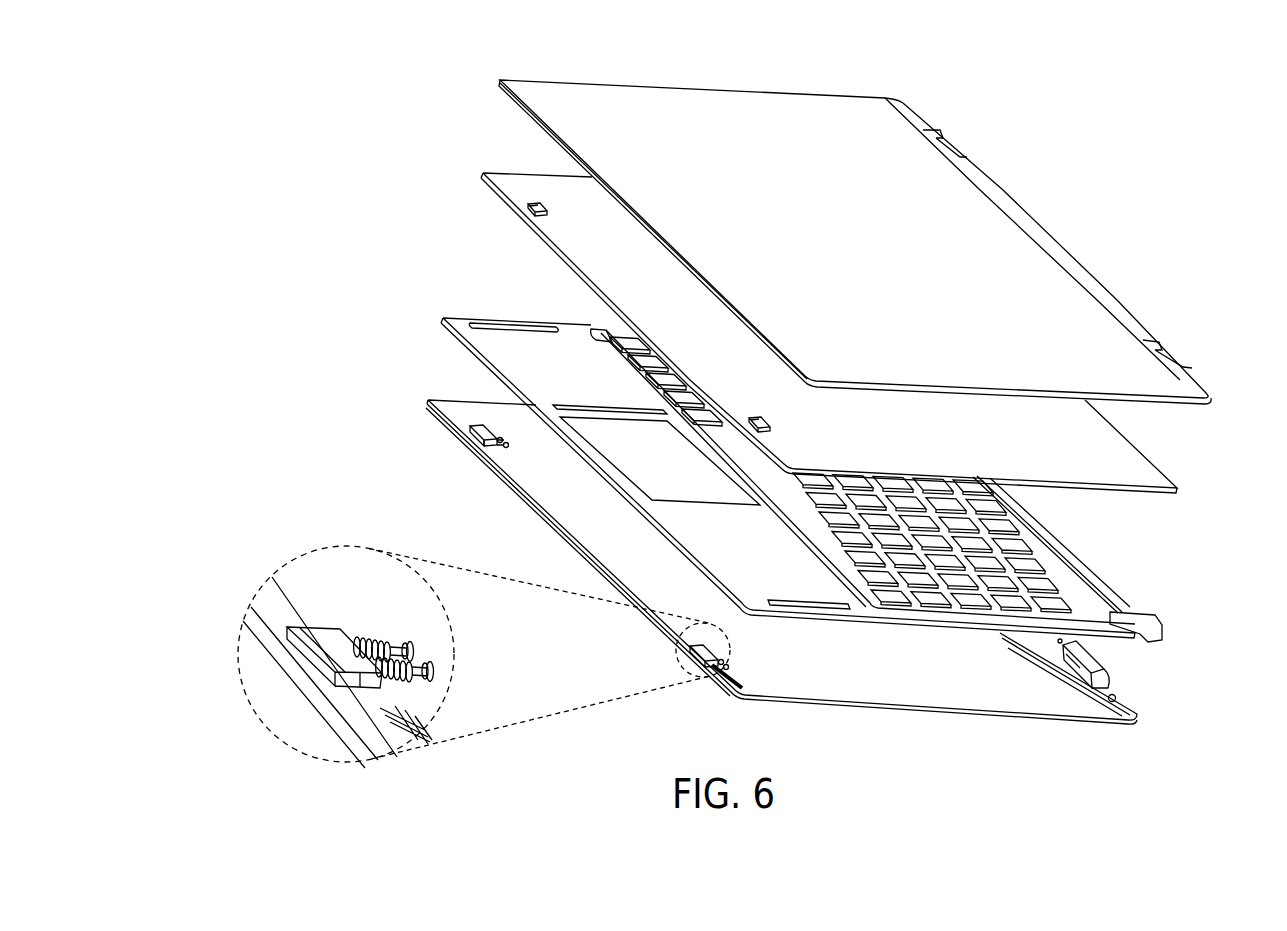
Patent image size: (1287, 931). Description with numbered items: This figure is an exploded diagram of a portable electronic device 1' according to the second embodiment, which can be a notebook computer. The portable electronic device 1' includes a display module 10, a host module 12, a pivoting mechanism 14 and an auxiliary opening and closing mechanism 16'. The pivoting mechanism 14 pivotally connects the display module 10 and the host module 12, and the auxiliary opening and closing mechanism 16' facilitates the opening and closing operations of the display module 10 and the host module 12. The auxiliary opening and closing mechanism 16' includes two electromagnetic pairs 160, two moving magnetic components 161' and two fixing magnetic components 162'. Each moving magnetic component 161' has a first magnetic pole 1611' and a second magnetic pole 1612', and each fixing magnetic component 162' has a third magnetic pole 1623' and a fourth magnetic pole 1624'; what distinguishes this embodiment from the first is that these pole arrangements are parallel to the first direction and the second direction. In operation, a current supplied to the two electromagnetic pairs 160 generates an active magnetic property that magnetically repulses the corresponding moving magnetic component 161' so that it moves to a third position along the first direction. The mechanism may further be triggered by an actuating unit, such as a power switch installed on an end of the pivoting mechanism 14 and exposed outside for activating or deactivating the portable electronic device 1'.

The portable electronic device 1' is at (878, 399).
The display module 10 is at (1080, 225).
The host module 12 is at (1108, 572).
The pivoting mechanism 14 is at (1137, 672).
The auxiliary opening and closing mechanism 16' is at (715, 478).
The electromagnetic pair 160 is at (488, 428).
The moving magnetic component 161' is at (466, 578).
The first magnetic pole 1611' is at (370, 548).
The second magnetic pole 1612' is at (392, 623).
The fixing magnetic component 162' is at (810, 333).
The third magnetic pole 1623' is at (674, 318).
The fourth magnetic pole 1624' is at (625, 280).